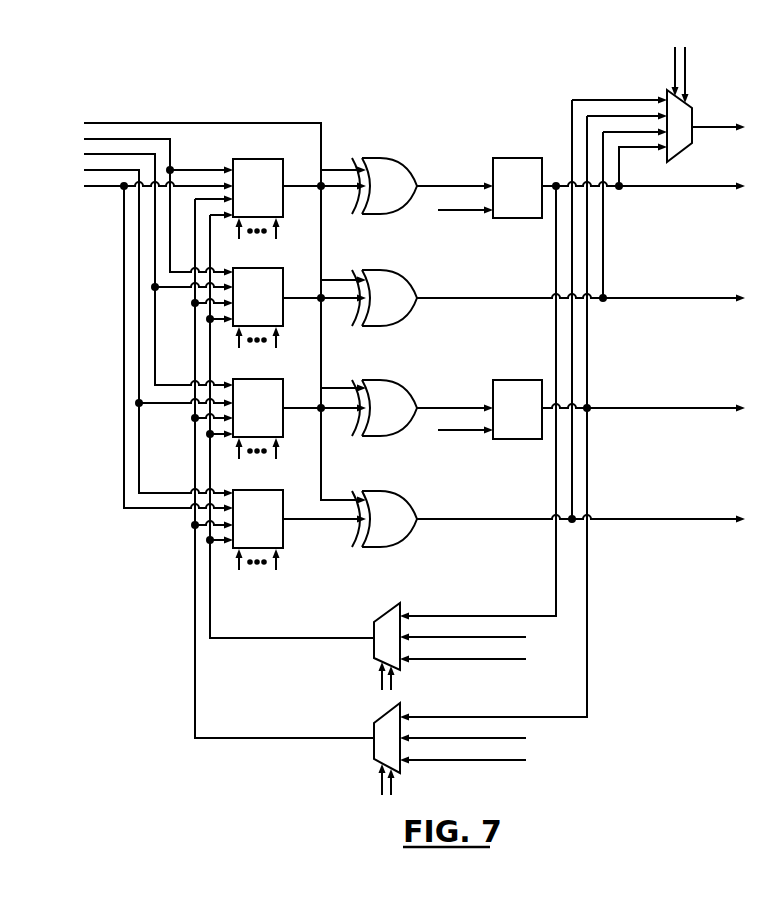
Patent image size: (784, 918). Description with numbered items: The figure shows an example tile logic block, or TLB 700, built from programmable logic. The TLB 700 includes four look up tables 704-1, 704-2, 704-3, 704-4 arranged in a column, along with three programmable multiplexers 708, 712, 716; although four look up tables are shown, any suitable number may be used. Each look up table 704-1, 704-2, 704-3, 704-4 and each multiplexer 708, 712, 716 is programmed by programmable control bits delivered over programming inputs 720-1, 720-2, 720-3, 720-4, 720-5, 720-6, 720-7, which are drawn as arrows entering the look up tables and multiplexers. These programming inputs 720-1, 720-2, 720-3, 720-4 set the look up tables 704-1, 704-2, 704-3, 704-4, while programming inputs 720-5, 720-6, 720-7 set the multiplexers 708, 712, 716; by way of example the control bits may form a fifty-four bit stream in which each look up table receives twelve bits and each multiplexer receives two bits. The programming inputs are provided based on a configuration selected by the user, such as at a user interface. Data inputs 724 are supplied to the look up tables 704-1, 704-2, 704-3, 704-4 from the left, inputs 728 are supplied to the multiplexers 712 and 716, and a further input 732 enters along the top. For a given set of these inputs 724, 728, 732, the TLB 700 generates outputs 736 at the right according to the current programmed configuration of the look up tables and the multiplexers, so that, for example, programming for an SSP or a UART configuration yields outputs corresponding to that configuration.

The tile logic block 700 is at (142, 772).
The look up table 704-1 is at (258, 159).
The look up table 704-2 is at (258, 268).
The look up table 704-3 is at (258, 379).
The look up table 704-4 is at (258, 490).
The programmable multiplexer 708 is at (692, 112).
The programmable multiplexer 712 is at (374, 628).
The programmable multiplexer 716 is at (374, 729).
The programming input 720-1 is at (296, 228).
The programming input 720-2 is at (296, 338).
The programming input 720-3 is at (296, 448).
The programming input 720-4 is at (296, 558).
The programming input 720-5 is at (655, 72).
The programming input 720-6 is at (366, 686).
The programming input 720-7 is at (366, 790).
The inputs 724 is at (80, 205).
The inputs 728 is at (626, 733).
The input 732 is at (255, 103).
The outputs 736 is at (712, 558).